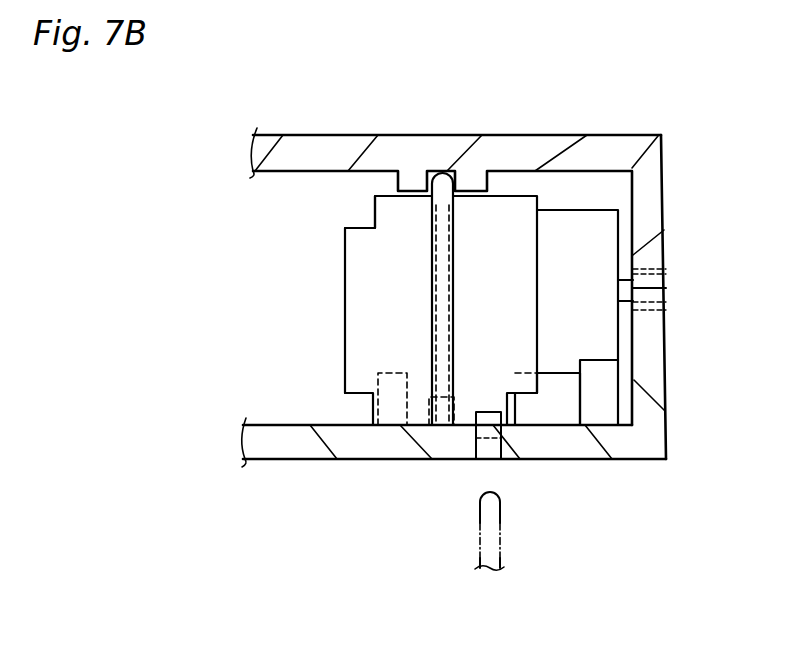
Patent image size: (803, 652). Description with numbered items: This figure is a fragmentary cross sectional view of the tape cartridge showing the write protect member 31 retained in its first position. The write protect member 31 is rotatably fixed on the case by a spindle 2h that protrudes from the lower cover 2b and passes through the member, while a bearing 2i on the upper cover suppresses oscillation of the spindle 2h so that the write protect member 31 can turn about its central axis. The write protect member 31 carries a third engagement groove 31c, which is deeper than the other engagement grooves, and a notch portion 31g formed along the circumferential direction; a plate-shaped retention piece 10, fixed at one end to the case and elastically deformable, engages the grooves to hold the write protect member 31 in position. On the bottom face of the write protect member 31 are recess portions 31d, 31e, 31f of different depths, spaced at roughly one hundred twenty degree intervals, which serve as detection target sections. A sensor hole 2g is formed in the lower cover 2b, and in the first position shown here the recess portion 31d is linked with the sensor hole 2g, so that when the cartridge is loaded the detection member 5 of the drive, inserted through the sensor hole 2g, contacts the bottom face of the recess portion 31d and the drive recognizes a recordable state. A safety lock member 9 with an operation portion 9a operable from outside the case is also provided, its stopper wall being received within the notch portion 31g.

The lower cover 2b is at (650, 383).
The sensor hole 2g is at (470, 438).
The spindle 2h is at (443, 250).
The bearing 2i is at (428, 172).
The detection member 5 is at (500, 537).
The safety lock member 9 is at (575, 225).
The operation portion 9a is at (657, 282).
The retention piece 10 is at (558, 417).
The write protect member 31 is at (362, 268).
The third engagement groove 31c is at (432, 300).
The recess portion 31d is at (488, 412).
The recess portion 31e is at (378, 395).
The recess portion 31f is at (430, 398).
The notch portion 31g is at (362, 228).